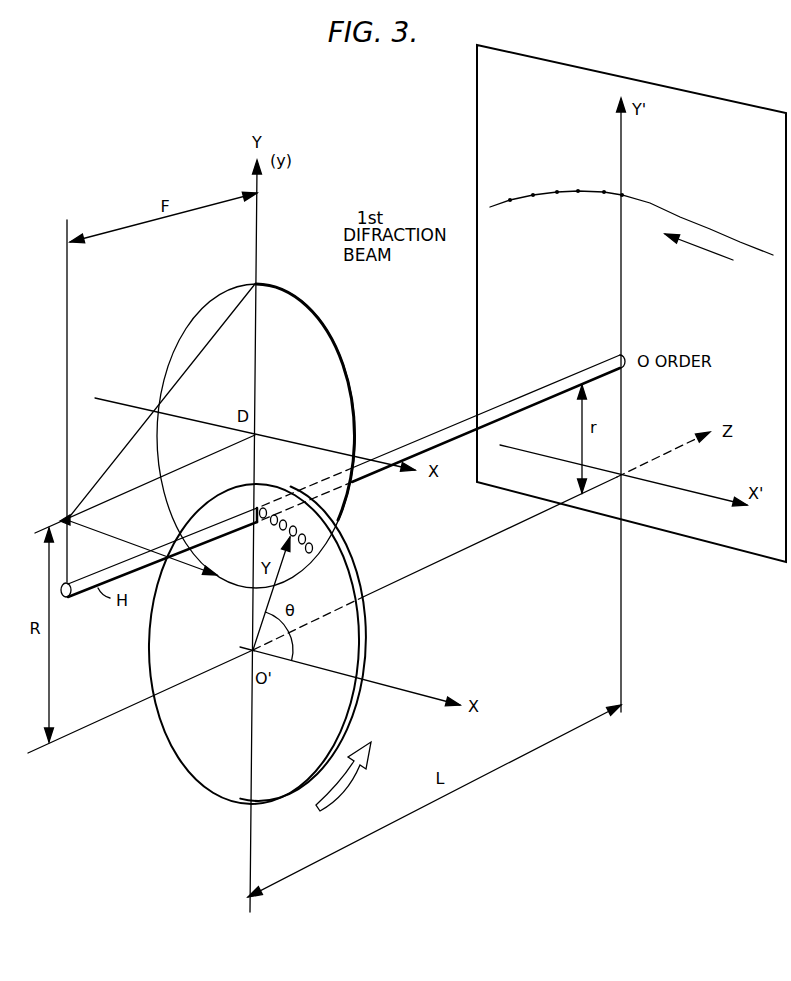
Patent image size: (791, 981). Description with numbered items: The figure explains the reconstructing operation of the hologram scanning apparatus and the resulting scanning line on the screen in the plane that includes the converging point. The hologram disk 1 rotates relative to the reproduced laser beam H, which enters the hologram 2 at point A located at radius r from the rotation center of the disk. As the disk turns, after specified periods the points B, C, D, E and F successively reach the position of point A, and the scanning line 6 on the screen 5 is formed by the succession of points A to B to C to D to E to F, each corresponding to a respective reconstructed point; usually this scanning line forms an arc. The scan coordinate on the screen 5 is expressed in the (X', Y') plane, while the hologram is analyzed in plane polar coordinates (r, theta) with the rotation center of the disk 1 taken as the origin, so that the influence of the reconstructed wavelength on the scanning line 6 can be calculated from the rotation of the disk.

The hologram disk 1 is at (352, 644).
The hologram 2 is at (284, 563).
The screen 5 is at (785, 108).
The scanning line 6 is at (705, 216).